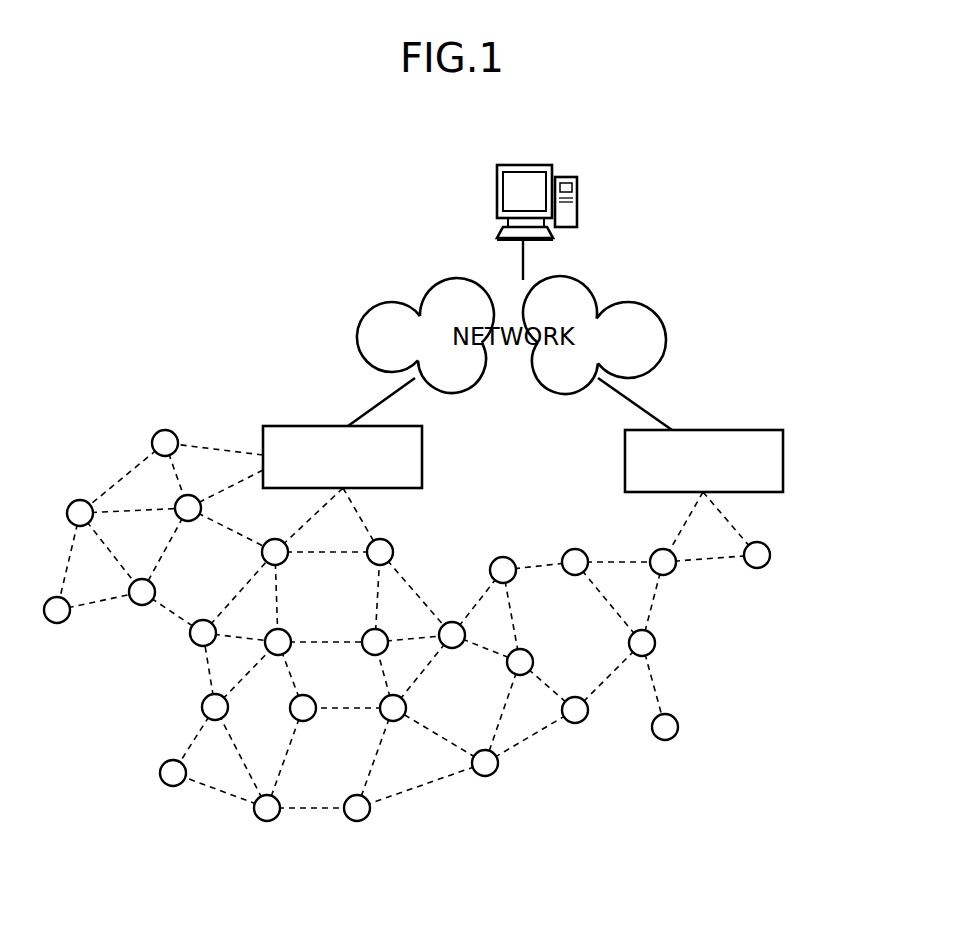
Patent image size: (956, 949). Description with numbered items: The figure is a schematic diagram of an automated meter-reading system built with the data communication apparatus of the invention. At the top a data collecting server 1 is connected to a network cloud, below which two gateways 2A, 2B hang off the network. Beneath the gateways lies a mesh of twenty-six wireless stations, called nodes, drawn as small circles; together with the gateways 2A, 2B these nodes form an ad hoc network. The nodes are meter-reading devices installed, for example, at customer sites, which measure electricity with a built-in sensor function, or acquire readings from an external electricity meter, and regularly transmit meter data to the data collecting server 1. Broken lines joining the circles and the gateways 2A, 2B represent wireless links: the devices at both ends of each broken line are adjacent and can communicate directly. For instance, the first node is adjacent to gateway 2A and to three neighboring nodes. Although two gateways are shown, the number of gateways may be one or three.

The data collecting server 1 is at (497, 186).
The gateway 2A is at (423, 445).
The gateway 2B is at (783, 447).